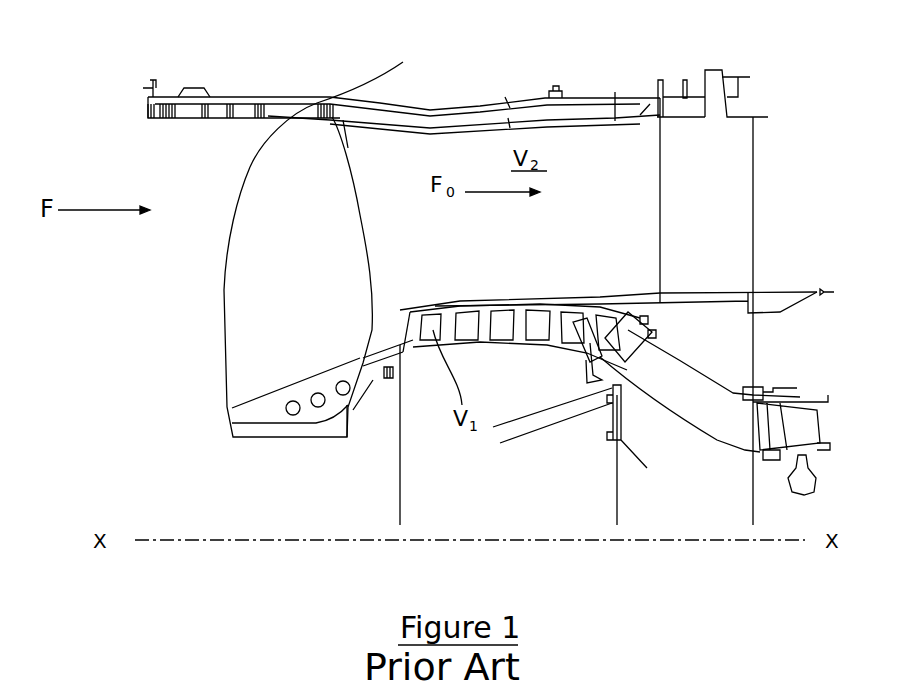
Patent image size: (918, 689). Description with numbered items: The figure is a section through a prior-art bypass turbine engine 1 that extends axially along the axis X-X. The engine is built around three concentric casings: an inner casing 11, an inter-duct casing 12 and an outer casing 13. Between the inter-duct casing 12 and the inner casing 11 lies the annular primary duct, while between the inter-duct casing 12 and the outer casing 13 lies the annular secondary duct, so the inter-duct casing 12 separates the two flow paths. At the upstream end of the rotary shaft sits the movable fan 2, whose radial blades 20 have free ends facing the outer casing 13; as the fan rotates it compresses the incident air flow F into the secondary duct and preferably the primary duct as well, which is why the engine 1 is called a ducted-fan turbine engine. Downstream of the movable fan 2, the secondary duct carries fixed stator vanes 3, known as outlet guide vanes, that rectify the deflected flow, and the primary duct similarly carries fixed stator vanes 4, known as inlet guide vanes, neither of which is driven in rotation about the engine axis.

The turbine engine 1 is at (228, 66).
The movable fan 2 is at (177, 413).
The stator vanes 3 is at (667, 203).
The stator vanes 4 is at (423, 322).
The inner casing 11 is at (385, 372).
The inter-duct casing 12 is at (433, 296).
The outer casing 13 is at (329, 105).
The radial blades 20 is at (240, 309).